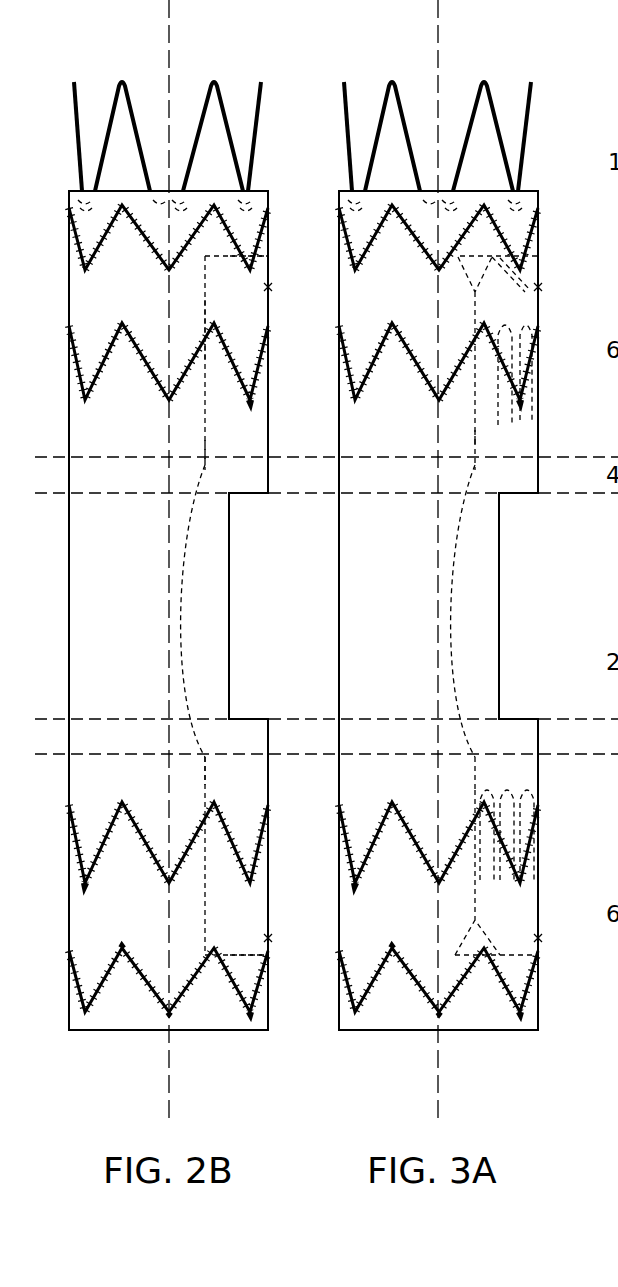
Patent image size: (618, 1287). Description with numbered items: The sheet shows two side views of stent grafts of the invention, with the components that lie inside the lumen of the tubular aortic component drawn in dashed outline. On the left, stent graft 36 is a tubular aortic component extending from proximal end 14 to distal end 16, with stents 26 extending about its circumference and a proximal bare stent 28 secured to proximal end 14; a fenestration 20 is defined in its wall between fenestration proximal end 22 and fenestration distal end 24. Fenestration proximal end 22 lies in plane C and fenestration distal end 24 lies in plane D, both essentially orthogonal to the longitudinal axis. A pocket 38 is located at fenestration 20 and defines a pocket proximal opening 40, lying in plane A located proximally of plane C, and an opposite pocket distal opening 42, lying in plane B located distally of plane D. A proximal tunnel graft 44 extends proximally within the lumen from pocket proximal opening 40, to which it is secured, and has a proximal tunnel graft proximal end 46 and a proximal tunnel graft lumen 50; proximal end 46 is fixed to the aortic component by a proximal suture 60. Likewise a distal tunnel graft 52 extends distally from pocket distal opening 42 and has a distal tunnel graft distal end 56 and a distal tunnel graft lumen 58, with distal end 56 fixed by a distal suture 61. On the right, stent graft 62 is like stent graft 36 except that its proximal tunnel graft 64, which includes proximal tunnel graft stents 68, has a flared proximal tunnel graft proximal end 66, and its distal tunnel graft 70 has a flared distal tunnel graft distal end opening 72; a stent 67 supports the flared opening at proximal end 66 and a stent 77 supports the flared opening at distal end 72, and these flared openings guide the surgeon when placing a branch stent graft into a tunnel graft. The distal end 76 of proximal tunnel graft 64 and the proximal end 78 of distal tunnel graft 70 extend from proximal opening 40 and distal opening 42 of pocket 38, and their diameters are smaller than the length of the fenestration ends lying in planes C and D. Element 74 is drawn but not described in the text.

In FIG. 2B, the stent graft 36 is at (100, 35).
In FIG. 3A, the stent graft 62 is at (370, 48).
In FIG. 2B, the proximal end 14 is at (128, 190).
In FIG. 3A, the proximal end 14 is at (395, 190).
In FIG. 2B, the distal end 16 is at (130, 1032).
In FIG. 3A, the distal end 16 is at (460, 1032).
In FIG. 2B, the fenestration 20 is at (262, 632).
In FIG. 3A, the fenestration 20 is at (520, 612).
In FIG. 2B, the fenestration proximal end 22 is at (246, 495).
In FIG. 3A, the fenestration proximal end 22 is at (497, 505).
In FIG. 2B, the fenestration distal end 24 is at (248, 719).
In FIG. 3A, the fenestration distal end 24 is at (510, 719).
In FIG. 2B, the stents 26 is at (69, 248).
In FIG. 2B, the proximal bare stent 28 is at (73, 110).
In FIG. 2B, the pocket 38 is at (178, 646).
In FIG. 3A, the pocket 38 is at (448, 646).
In FIG. 2B, the pocket proximal opening 40 is at (230, 452).
In FIG. 3A, the pocket proximal opening 40 is at (480, 452).
In FIG. 2B, the pocket distal opening 42 is at (205, 762).
In FIG. 3A, the pocket distal opening 42 is at (475, 765).
In FIG. 2B, the proximal tunnel graft 44 is at (205, 326).
In FIG. 2B, the proximal tunnel graft proximal end 46 is at (210, 257).
In FIG. 2B, the proximal tunnel graft lumen 50 is at (240, 320).
In FIG. 2B, the distal tunnel graft 52 is at (203, 900).
In FIG. 2B, the distal tunnel graft distal end 56 is at (240, 955).
In FIG. 2B, the distal tunnel graft lumen 58 is at (240, 905).
In FIG. 2B, the proximal suture 60 is at (272, 287).
In FIG. 3A, the proximal suture 60 is at (542, 287).
In FIG. 2B, the distal suture 61 is at (268, 938).
In FIG. 3A, the distal suture 61 is at (538, 938).
In FIG. 3A, the proximal tunnel graft 64 is at (468, 330).
In FIG. 3A, the proximal tunnel graft proximal end 66 is at (468, 257).
In FIG. 3A, the stent 67 is at (480, 282).
In FIG. 3A, the proximal tunnel graft stents 68 is at (512, 335).
In FIG. 3A, the distal tunnel graft 70 is at (470, 872).
In FIG. 3A, the distal tunnel graft distal end opening 72 is at (510, 955).
In FIG. 3A, the lower pocket folds 74 is at (512, 805).
In FIG. 2B, the distal end 76 is at (205, 468).
In FIG. 3A, the distal end 76 is at (500, 460).
In FIG. 3A, the stent 77 is at (505, 938).
In FIG. 2B, the proximal end 78 is at (235, 760).
In FIG. 3A, the proximal end 78 is at (505, 760).
In FIG. 2B, the plane A is at (78, 457).
In FIG. 2B, the plane B is at (68, 754).
In FIG. 2B, the plane C is at (55, 493).
In FIG. 2B, the plane D is at (60, 719).